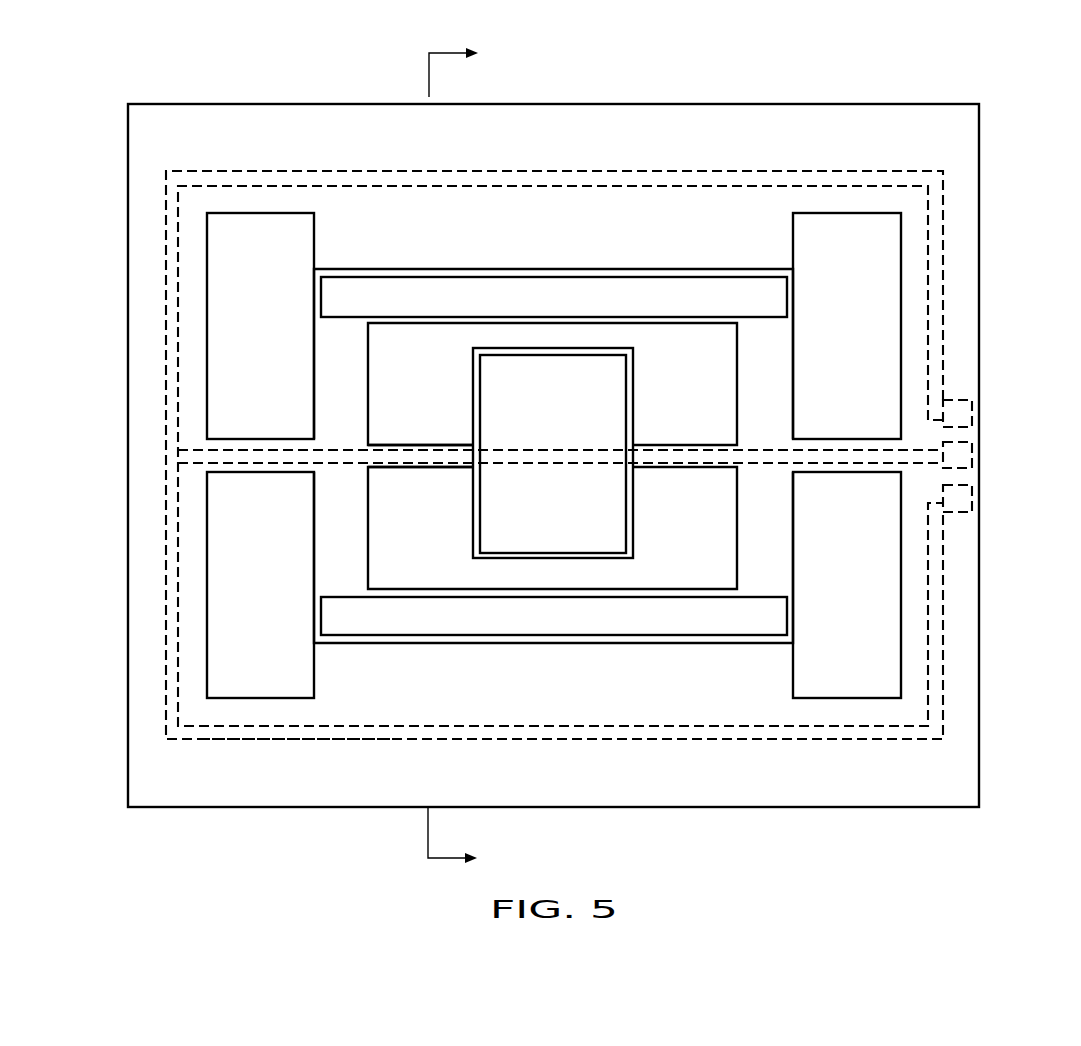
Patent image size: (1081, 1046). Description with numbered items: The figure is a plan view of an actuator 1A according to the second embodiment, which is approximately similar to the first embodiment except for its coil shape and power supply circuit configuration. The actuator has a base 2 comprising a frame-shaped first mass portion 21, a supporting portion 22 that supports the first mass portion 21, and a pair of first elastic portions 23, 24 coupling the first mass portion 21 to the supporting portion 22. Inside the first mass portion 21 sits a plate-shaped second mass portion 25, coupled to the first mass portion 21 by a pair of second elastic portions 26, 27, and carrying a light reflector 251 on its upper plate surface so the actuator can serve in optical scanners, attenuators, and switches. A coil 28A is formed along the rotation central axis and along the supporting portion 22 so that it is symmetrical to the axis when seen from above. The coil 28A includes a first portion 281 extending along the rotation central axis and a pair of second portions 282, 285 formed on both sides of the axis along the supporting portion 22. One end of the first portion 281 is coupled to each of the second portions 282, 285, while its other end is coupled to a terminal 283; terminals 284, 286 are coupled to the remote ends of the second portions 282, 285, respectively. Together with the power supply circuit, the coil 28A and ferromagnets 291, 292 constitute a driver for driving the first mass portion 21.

The actuator 1A is at (910, 80).
The base 2 is at (947, 158).
The supporting portion 22 is at (955, 214).
The first mass portion 21 is at (728, 268).
The first elastic portion 23 is at (255, 440).
The first elastic portion 24 is at (847, 440).
The second mass portion 25 is at (475, 560).
The light reflector 251 is at (562, 540).
The second elastic portion 26 is at (448, 440).
The second elastic portion 27 is at (716, 440).
The coil 28A is at (386, 442).
The first portion 281 is at (672, 462).
The second portion 282 is at (294, 730).
The terminal 283 is at (975, 453).
The terminal 284 is at (975, 497).
The second portion 285 is at (274, 178).
The terminal 286 is at (975, 403).
The ferromagnet 291 is at (693, 620).
The ferromagnet 292 is at (603, 300).